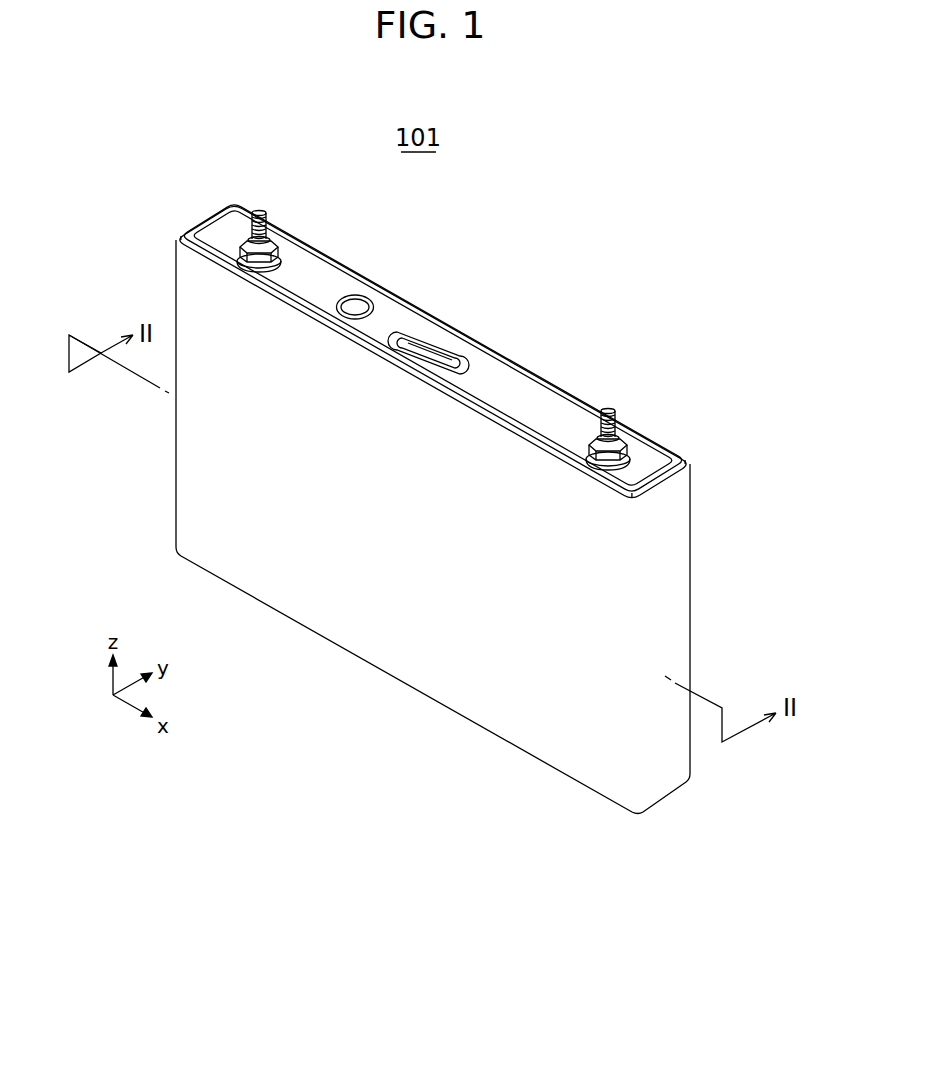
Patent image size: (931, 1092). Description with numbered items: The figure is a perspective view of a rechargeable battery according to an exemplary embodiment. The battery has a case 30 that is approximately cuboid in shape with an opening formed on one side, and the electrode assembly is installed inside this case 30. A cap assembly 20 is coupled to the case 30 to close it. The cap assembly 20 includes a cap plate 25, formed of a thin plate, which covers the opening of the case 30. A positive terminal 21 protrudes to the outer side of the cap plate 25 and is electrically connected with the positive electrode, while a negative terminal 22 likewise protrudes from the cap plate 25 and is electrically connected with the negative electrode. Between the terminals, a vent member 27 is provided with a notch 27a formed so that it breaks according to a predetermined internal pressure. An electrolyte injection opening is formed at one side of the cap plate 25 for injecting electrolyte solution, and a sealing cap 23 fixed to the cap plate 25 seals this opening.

The cap assembly 20 is at (433, 351).
The positive terminal 21 is at (260, 211).
The negative terminal 22 is at (609, 410).
The sealing cap 23 is at (356, 300).
The cap plate 25 is at (543, 400).
The vent member 27 is at (440, 305).
The notch 27a is at (420, 348).
The case 30 is at (398, 652).